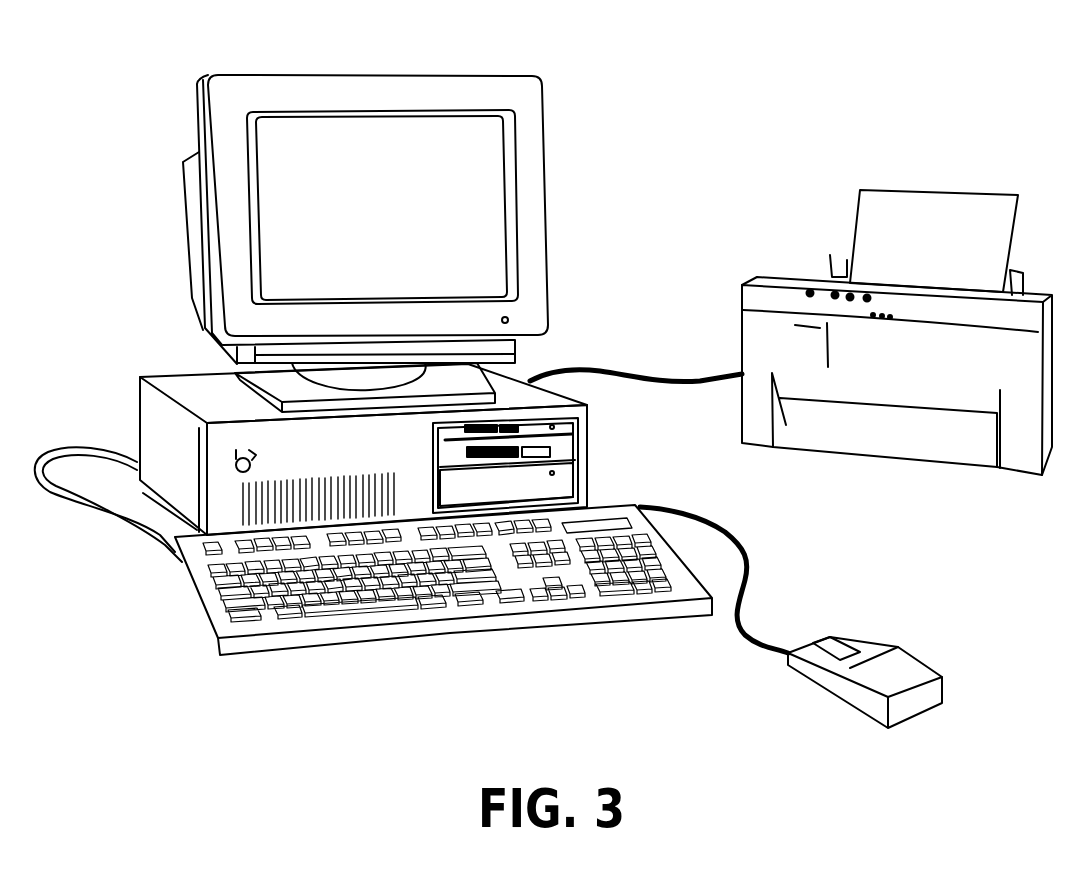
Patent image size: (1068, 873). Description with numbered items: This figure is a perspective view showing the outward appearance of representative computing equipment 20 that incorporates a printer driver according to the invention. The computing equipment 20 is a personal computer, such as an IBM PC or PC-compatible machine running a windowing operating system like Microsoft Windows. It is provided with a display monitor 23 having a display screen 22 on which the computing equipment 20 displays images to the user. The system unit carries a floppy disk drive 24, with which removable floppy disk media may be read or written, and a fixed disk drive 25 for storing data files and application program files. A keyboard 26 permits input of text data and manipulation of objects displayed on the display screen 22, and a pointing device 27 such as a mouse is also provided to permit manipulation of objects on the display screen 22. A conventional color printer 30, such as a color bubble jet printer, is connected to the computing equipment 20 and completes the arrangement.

The computing equipment 20 is at (655, 160).
The display screen 22 is at (482, 247).
The display monitor 23 is at (404, 215).
The floppy disk drive 24 is at (543, 453).
The fixed disk drive 25 is at (535, 488).
The keyboard 26 is at (300, 620).
The pointing device 27 is at (910, 717).
The color printer 30 is at (788, 280).